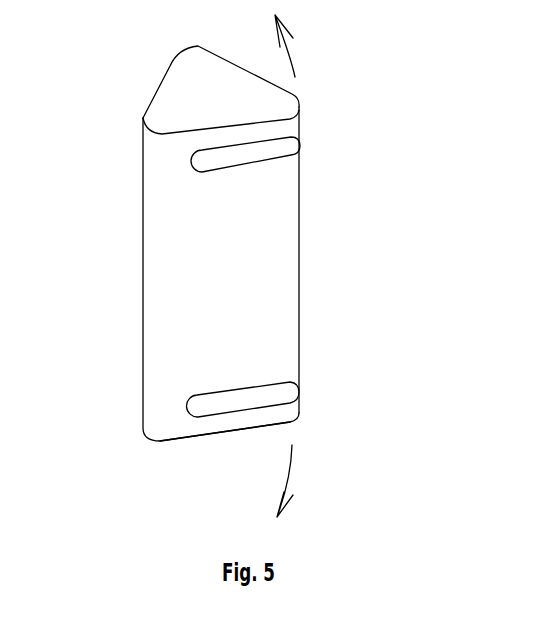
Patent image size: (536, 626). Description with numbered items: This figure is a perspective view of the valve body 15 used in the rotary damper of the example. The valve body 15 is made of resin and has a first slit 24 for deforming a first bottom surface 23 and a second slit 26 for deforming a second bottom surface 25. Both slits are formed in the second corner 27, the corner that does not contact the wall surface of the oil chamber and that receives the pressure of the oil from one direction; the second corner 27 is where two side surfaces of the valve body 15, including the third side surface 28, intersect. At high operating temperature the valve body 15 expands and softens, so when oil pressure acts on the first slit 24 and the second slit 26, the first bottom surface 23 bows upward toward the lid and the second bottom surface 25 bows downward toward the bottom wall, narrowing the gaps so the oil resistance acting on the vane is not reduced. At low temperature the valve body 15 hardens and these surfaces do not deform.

The valve body 15 is at (228, 260).
The first bottom surface 23 is at (177, 83).
The first slit 24 is at (273, 151).
The second bottom surface 25 is at (183, 441).
The second slit 26 is at (277, 393).
The second corner 27 is at (295, 255).
The third side surface 28 is at (252, 283).